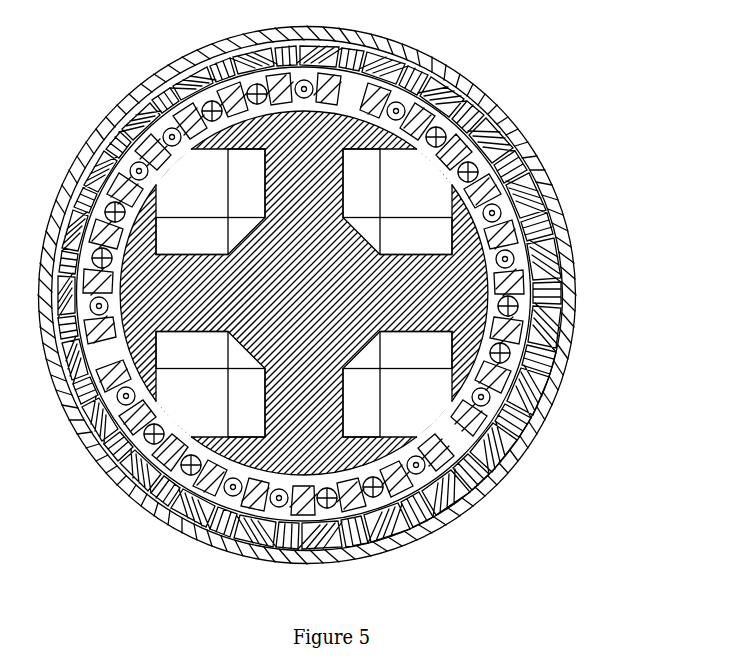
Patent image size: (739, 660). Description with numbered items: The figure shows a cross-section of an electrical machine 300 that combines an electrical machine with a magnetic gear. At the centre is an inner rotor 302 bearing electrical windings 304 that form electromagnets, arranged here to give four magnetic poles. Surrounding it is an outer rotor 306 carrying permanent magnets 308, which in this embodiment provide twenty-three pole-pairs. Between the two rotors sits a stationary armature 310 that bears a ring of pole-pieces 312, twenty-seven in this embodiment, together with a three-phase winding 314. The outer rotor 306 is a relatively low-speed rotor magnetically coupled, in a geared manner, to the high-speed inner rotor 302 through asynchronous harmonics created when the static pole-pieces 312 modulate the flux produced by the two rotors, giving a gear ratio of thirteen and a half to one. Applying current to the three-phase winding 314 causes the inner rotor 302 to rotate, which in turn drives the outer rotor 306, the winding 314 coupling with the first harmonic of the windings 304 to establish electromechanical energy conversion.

The electrical machine 300 is at (369, 294).
The inner rotor 302 is at (349, 246).
The electrical windings 304 is at (410, 393).
The outer rotor 306 is at (572, 234).
The permanent magnets 308 is at (548, 280).
The stationary armature 310 is at (369, 243).
The pole-pieces 312 is at (426, 120).
The 3-phase winding 314 is at (452, 112).